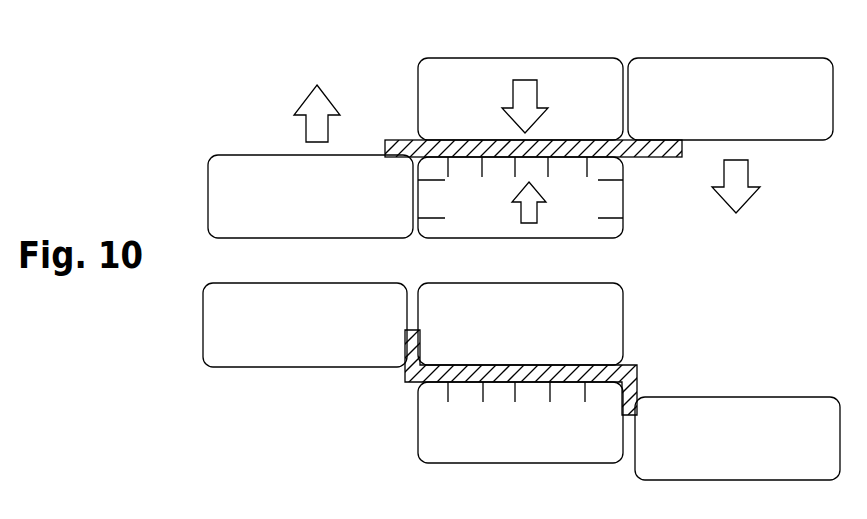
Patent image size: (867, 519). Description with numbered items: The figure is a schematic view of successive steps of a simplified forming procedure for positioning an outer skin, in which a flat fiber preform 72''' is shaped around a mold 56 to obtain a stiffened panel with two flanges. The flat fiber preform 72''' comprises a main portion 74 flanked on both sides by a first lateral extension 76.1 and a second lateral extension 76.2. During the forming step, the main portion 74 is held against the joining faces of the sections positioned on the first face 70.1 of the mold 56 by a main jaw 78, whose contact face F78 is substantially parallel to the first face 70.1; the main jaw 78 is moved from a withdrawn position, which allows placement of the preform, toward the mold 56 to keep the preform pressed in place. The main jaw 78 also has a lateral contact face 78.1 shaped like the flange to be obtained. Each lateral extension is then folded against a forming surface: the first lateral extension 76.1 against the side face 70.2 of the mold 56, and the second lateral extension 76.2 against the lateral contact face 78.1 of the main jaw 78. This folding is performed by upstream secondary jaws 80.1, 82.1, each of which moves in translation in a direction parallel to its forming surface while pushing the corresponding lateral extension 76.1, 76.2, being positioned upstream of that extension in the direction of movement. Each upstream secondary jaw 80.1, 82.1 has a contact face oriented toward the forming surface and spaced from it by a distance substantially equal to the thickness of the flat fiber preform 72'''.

The mold 56 is at (482, 205).
The first face of the mold 70.1 is at (493, 158).
The side face of the mold 70.2 is at (623, 198).
The flat fiber preform 72''' is at (589, 193).
The main portion 74 is at (583, 152).
The first lateral extension 76.1 is at (659, 158).
The second lateral extension 76.2 is at (399, 140).
The main jaw 78 is at (442, 108).
The lateral contact face 78.1 is at (418, 82).
The upstream secondary jaw 80.1 is at (760, 97).
The upstream secondary jaw 82.1 is at (254, 172).
The contact face of the main jaw F78 is at (570, 140).